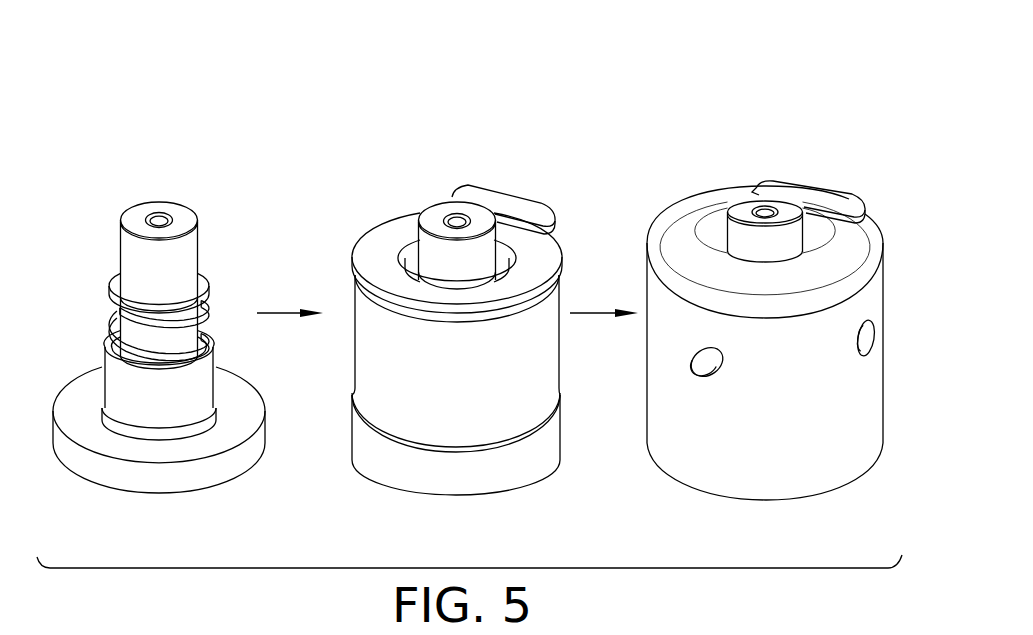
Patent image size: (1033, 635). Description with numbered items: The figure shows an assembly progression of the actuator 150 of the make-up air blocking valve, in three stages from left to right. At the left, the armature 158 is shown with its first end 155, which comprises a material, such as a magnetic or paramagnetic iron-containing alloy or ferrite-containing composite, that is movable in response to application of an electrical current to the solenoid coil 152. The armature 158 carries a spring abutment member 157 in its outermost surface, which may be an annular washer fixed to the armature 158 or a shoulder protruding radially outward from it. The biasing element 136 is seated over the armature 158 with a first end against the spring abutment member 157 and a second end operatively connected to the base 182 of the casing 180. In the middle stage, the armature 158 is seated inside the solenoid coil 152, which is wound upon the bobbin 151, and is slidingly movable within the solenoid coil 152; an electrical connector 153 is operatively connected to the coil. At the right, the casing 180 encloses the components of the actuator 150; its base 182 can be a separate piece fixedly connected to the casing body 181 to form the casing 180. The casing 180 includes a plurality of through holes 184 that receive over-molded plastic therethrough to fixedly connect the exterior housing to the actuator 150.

The actuator 150 is at (810, 113).
The bobbin 151 is at (377, 247).
The solenoid coil 152 is at (425, 290).
The electrical connector 153 is at (492, 197).
The first end of the armature 155 is at (165, 207).
The spring abutment member 157 is at (210, 278).
The armature 158 is at (425, 251).
The biasing element 136 is at (113, 307).
The casing 180 is at (905, 238).
The casing body 181 is at (690, 457).
The base 182 is at (150, 483).
The through holes 184 is at (875, 332).